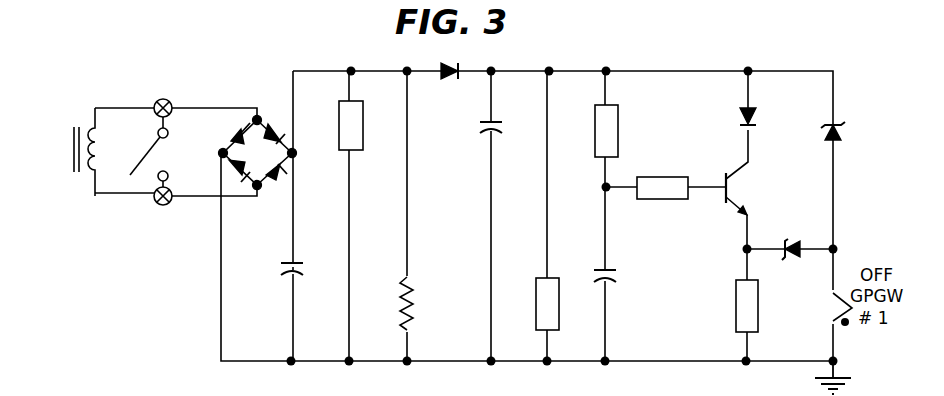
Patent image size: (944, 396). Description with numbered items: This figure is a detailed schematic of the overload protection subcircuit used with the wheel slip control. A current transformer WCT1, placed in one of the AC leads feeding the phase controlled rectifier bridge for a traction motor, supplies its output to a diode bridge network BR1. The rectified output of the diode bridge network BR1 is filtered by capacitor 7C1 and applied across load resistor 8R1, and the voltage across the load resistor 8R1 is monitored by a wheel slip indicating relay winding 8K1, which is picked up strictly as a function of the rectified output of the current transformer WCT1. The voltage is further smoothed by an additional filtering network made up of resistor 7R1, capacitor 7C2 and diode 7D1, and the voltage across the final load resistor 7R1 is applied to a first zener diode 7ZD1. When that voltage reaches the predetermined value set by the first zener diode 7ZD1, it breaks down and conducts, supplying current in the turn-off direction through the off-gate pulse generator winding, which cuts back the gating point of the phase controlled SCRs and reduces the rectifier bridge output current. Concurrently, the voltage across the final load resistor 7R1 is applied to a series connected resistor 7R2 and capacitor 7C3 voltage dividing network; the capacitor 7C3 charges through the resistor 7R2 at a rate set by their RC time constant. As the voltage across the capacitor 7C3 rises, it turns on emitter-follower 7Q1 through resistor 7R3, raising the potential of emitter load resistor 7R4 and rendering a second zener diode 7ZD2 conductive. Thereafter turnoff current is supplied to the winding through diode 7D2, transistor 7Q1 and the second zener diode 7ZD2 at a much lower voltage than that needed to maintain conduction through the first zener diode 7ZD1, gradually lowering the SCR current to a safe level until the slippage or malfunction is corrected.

The current transformer WCT1 is at (58, 150).
The diode bridge network BR1 is at (258, 153).
The capacitor 7C1 is at (272, 273).
The load resistor 8R1 is at (333, 125).
The wheel slip indicating relay winding 8K1 is at (384, 304).
The diode 7D1 is at (457, 61).
The capacitor 7C2 is at (471, 130).
The final load resistor 7R1 is at (528, 304).
The resistor 7R2 is at (587, 131).
The capacitor 7C3 is at (586, 265).
The resistor 7R3 is at (666, 177).
The emitter-follower 7Q1 is at (749, 189).
The diode 7D2 is at (729, 98).
The first zener diode 7ZD1 is at (811, 129).
The second zener diode 7ZD2 is at (790, 242).
The emitter load resistor 7R4 is at (726, 305).